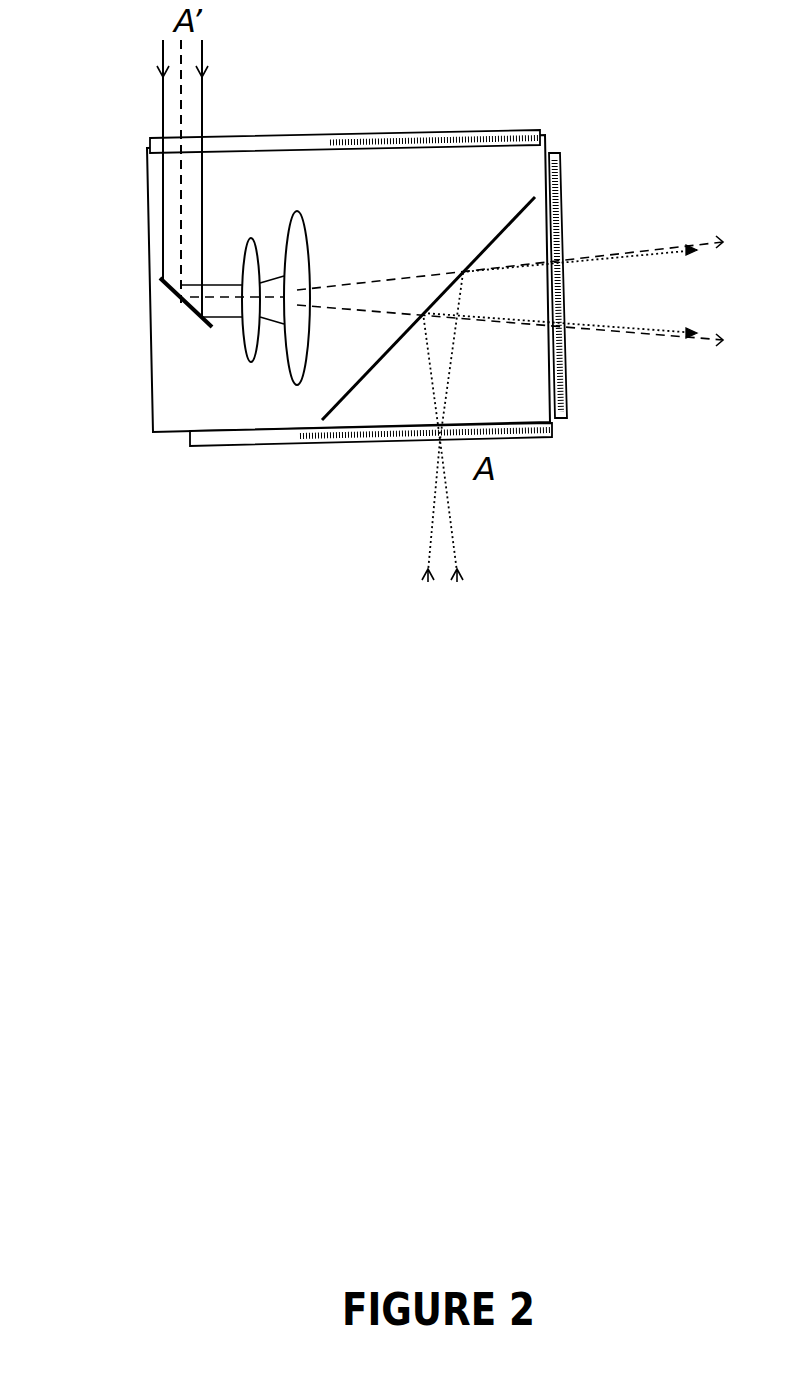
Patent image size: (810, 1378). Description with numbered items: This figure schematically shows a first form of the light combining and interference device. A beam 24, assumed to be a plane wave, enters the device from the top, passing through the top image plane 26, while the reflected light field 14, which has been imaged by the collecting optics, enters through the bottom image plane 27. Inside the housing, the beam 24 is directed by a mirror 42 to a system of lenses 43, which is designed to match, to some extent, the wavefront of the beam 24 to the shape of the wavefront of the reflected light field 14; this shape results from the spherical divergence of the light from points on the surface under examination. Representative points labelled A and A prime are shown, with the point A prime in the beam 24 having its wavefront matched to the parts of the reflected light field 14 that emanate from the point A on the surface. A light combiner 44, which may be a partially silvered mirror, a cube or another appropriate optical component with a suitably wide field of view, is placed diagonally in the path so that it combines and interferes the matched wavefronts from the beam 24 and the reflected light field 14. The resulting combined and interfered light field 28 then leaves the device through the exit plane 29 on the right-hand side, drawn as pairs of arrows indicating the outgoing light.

The reflected light field 14 is at (432, 515).
The beam 24 is at (163, 100).
The top image plane 26 is at (370, 130).
The bottom image plane 27 is at (287, 446).
The combined and interfered light field 28 is at (510, 236).
The exit plane 29 is at (560, 197).
The mirror 42 is at (190, 290).
The system of lenses 43 is at (251, 238).
The light combiner 44 is at (502, 225).